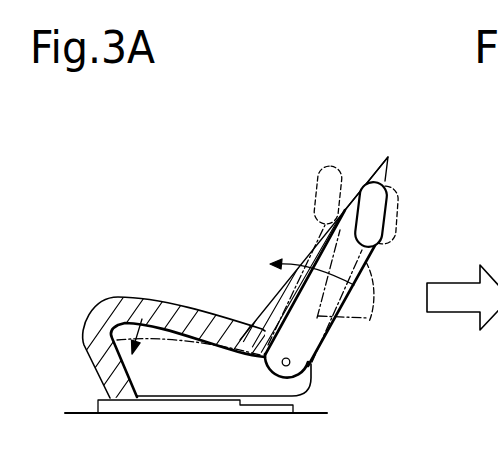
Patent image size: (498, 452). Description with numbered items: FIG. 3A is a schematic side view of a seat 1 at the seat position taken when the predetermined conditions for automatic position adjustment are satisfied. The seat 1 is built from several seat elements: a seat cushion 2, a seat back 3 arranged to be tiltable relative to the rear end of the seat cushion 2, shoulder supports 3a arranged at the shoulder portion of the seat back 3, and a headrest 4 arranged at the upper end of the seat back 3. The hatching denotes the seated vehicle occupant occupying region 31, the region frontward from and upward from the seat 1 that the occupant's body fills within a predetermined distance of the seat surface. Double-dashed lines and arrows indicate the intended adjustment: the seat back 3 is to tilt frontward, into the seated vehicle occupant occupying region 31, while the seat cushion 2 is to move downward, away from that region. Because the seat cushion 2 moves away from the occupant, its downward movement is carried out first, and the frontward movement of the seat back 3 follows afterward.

The seat 1 is at (169, 207).
The seat cushion 2 is at (174, 306).
The seat back 3 is at (369, 322).
The shoulder supports 3a is at (323, 250).
The seated vehicle occupant occupying region 31 is at (355, 172).
The headrest 4 is at (397, 222).